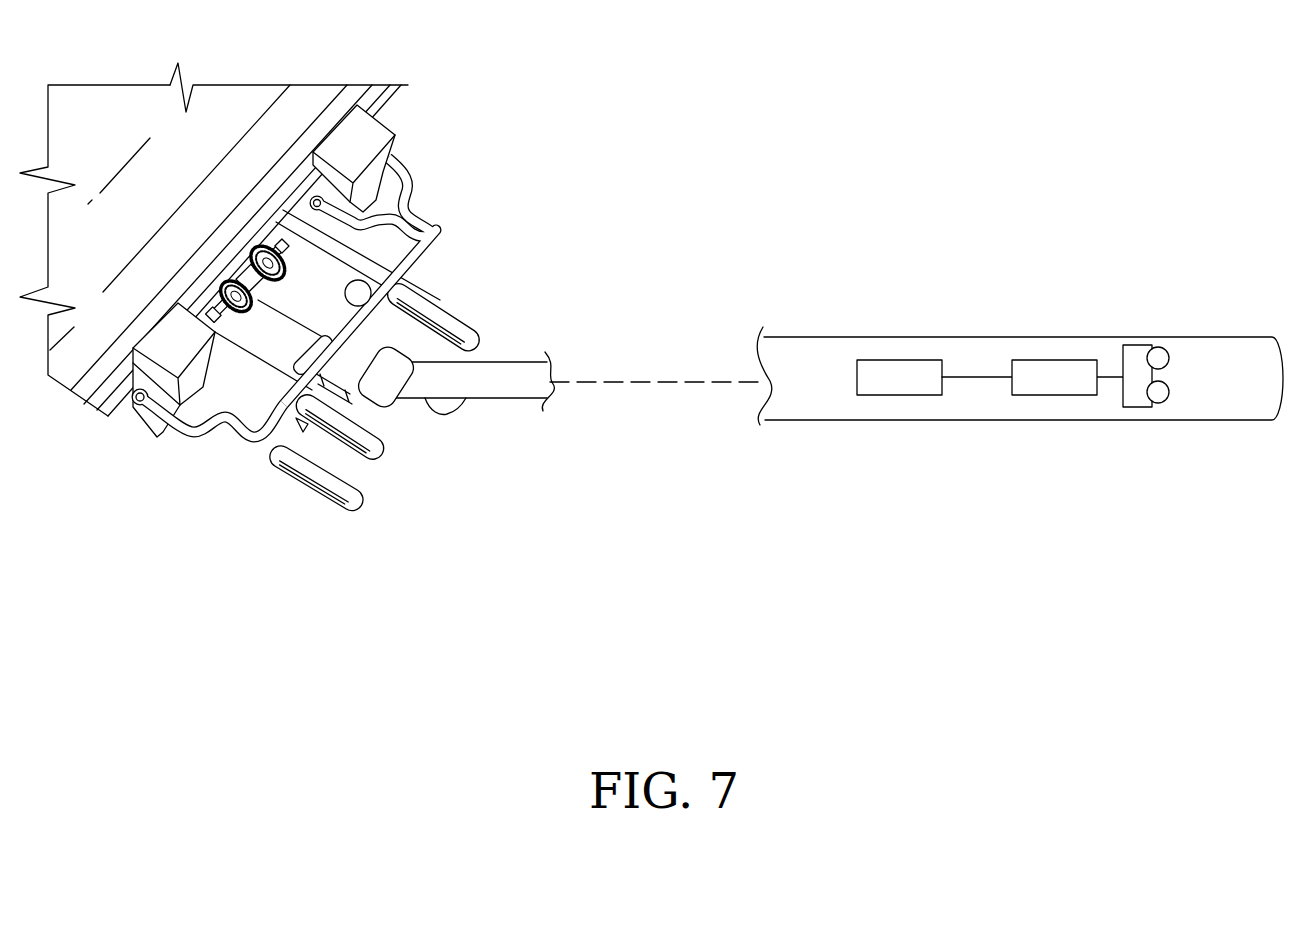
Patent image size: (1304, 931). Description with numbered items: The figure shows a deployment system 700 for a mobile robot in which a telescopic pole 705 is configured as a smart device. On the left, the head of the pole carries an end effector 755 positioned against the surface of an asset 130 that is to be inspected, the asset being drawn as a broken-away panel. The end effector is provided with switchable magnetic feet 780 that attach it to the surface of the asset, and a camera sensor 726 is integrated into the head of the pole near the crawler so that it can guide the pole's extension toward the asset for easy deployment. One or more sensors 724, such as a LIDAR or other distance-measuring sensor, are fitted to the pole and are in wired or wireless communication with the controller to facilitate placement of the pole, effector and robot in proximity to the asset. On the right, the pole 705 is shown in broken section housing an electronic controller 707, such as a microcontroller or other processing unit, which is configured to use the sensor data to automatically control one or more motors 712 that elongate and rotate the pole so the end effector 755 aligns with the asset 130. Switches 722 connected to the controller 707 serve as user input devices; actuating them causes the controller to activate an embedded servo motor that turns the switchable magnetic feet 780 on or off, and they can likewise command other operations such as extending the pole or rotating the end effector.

The asset 130 is at (118, 131).
The deployment system 700 is at (1116, 149).
The telescopic pole 705 is at (818, 388).
The electronic controller 707 is at (1047, 360).
The motors 712 is at (890, 360).
The switches 722 is at (1157, 348).
The sensors 724 is at (363, 282).
The camera sensor 726 is at (375, 432).
The end effector 755 is at (250, 442).
The switchable magnetic feet 780 is at (363, 143).